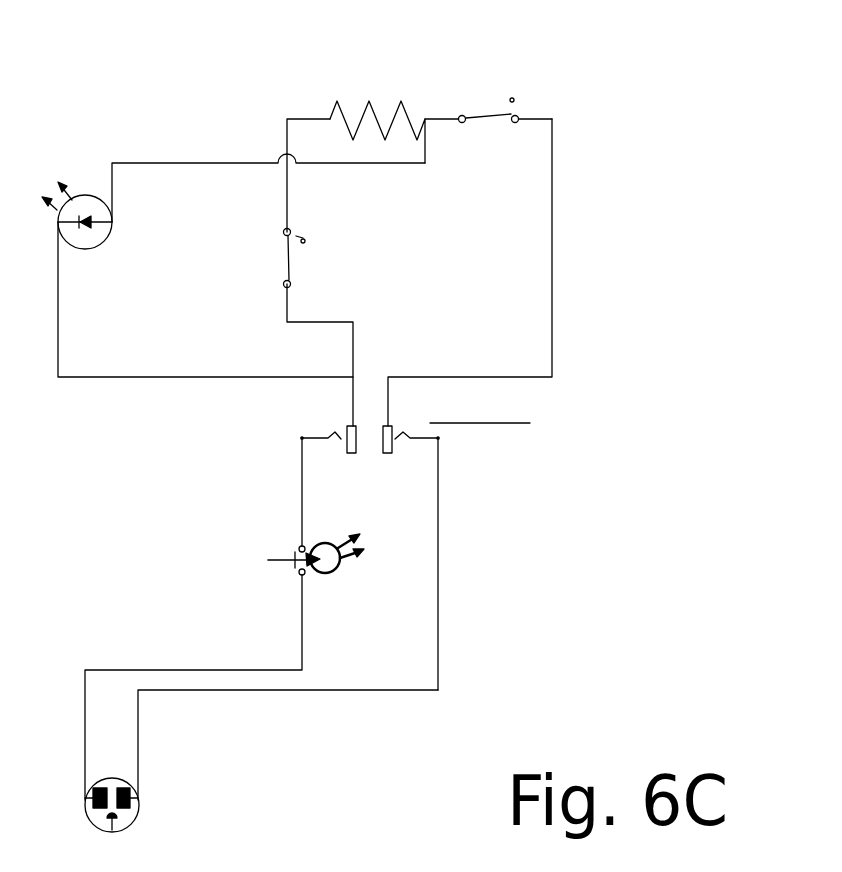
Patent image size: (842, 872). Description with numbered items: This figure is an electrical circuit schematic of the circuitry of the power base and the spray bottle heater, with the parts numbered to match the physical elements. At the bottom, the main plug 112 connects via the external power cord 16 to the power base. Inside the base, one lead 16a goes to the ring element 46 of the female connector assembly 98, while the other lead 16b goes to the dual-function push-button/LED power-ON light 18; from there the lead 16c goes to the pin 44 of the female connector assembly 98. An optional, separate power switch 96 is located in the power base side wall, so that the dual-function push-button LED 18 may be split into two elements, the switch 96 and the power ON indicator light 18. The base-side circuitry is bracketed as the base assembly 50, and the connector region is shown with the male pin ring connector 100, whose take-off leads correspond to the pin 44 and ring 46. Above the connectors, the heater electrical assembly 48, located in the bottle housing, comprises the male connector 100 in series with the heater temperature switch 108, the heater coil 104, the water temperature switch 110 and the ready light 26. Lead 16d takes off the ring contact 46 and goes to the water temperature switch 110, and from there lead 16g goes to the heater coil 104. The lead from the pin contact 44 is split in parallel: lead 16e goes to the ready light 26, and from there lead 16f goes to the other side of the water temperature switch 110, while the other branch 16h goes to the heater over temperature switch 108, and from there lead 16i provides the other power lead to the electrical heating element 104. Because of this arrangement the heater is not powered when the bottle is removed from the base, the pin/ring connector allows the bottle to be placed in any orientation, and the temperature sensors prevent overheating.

The external power cord 16 is at (307, 696).
The lead 16a is at (440, 550).
The lead 16b is at (300, 611).
The lead 16c is at (300, 505).
The lead 16d is at (555, 307).
The lead 16e is at (183, 370).
The lead 16f is at (202, 161).
The lead 16g is at (443, 117).
The lead 16h is at (330, 319).
The lead 16i is at (288, 193).
The push-button/LED power-ON light 18 is at (342, 578).
The ready light 26 is at (98, 256).
The pin 44 is at (390, 458).
The ring element 46 is at (340, 458).
The heater electrical assembly 48 is at (735, 380).
The base assembly 50 is at (720, 423).
The power switch 96 is at (230, 563).
The female connector assembly 98 is at (455, 457).
The male pin ring connector 100 is at (321, 457).
The heater coil 104 is at (399, 106).
The heater temperature switch 108 is at (320, 229).
The water temperature switch 110 is at (516, 97).
The main plug 112 is at (140, 816).